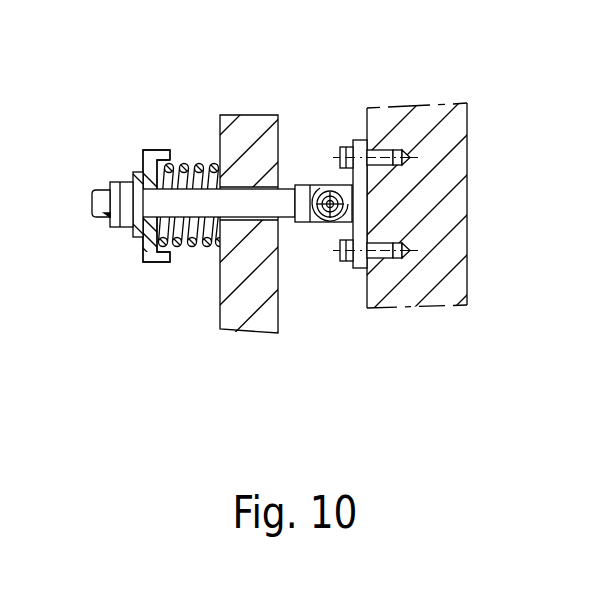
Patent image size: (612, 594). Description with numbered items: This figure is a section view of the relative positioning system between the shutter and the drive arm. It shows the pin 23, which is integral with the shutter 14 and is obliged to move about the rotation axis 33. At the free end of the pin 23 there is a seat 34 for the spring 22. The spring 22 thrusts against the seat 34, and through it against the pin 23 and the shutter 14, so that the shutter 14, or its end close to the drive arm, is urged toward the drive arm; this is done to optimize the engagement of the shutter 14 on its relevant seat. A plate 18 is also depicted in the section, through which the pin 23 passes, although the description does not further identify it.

The shutter 14 is at (427, 292).
The support plate 18 is at (252, 137).
The spring 22 is at (193, 170).
The pin 23 is at (140, 210).
The rotation axis 33 is at (332, 207).
The seat 34 is at (148, 162).